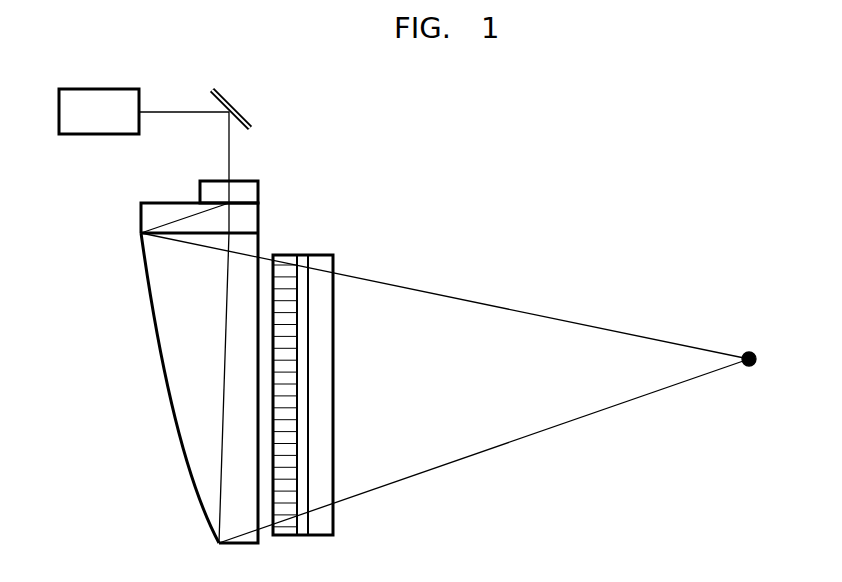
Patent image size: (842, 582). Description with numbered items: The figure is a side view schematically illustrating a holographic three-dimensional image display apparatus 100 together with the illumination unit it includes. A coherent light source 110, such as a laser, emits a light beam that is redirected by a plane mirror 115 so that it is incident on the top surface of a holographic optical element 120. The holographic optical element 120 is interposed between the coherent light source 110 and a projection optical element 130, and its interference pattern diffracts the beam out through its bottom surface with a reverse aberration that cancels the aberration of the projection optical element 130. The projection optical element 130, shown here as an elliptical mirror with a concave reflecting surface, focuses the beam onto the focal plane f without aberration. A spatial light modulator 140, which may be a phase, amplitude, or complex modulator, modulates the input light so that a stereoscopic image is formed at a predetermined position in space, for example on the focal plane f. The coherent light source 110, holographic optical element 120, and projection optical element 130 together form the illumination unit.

The holographic 3D image display apparatus 100 is at (134, 456).
The coherent light source 110 is at (108, 89).
The plane mirror 115 is at (240, 111).
The holographic optical element 120 is at (249, 181).
The projection optical element 130 is at (160, 382).
The spatial light modulator 140 is at (318, 253).